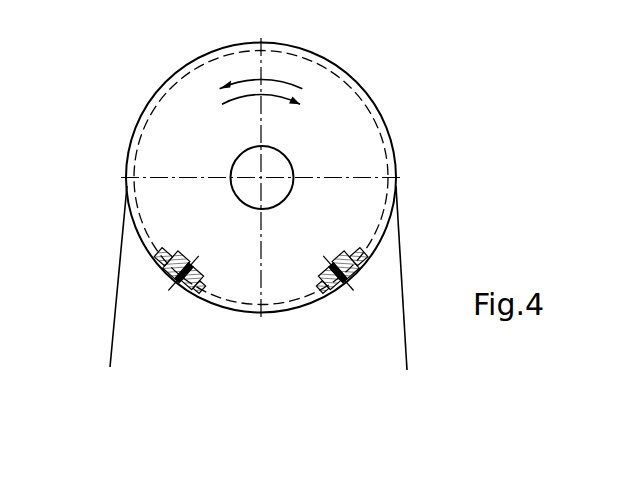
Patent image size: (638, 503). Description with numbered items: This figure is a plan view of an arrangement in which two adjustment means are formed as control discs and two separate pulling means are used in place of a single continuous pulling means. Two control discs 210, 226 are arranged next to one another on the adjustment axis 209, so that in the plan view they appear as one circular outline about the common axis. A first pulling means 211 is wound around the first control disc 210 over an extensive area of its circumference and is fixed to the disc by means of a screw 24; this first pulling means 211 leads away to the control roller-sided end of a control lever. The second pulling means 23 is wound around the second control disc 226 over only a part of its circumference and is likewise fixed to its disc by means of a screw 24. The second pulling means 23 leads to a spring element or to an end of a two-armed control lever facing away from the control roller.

The first control disc 210 is at (261, 178).
The second control disc 226 is at (261, 178).
The adjustment axis 209 is at (263, 179).
The first pulling means 211 is at (117, 272).
The second pulling means 23 is at (400, 292).
The screw 24 is at (162, 280).